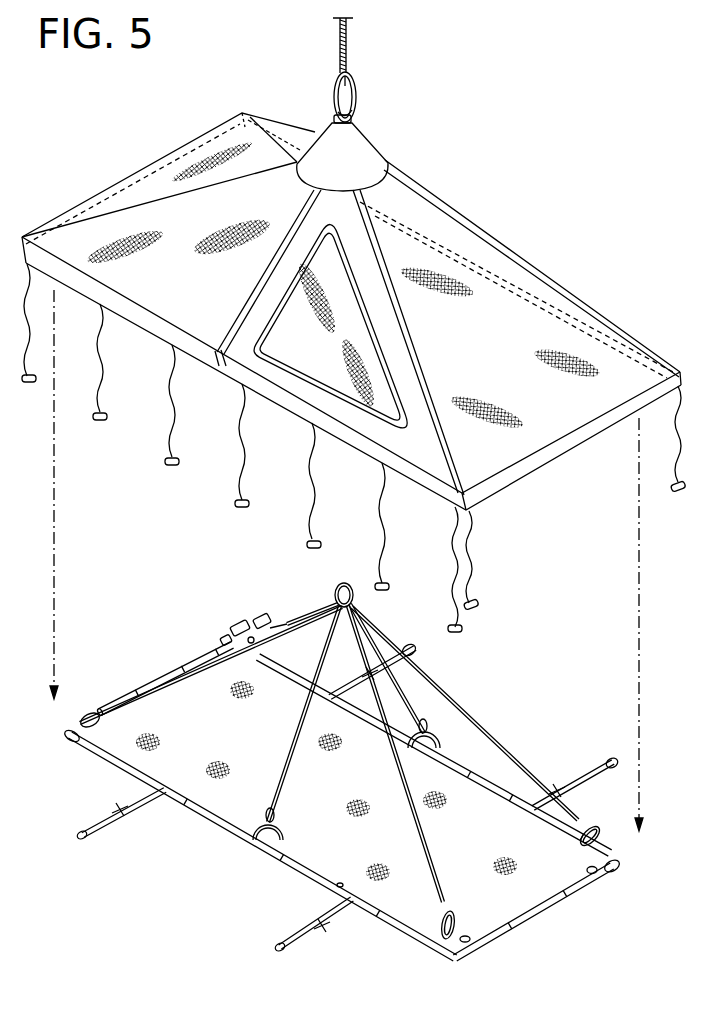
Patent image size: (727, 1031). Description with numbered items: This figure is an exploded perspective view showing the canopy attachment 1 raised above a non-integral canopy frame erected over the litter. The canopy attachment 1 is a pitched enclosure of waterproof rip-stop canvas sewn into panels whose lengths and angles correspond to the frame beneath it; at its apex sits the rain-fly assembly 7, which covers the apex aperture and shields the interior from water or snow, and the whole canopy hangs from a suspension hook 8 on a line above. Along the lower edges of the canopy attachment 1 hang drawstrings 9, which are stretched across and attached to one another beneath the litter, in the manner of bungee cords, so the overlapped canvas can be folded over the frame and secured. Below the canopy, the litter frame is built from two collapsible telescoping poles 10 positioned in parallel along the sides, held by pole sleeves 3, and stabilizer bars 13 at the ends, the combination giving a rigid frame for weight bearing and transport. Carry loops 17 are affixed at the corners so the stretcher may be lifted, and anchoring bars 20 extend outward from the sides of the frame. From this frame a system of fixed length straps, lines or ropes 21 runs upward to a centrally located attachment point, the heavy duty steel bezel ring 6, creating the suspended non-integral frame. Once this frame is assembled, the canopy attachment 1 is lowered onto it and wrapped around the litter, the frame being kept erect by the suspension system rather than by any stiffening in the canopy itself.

The canopy attachment 1 is at (114, 145).
The pole sleeves 3 is at (426, 948).
The bezel ring 6 is at (346, 585).
The rain-fly assembly 7 is at (358, 148).
The suspension hook / carabiner 8 is at (357, 80).
The drawstrings 9 is at (170, 432).
The collapsible telescoping poles 10 is at (66, 737).
The stabilizer bars 13 is at (152, 680).
The carry loops 17 is at (258, 826).
The anchoring bars 20 is at (113, 822).
The straps, lines or ropes 21 is at (170, 703).